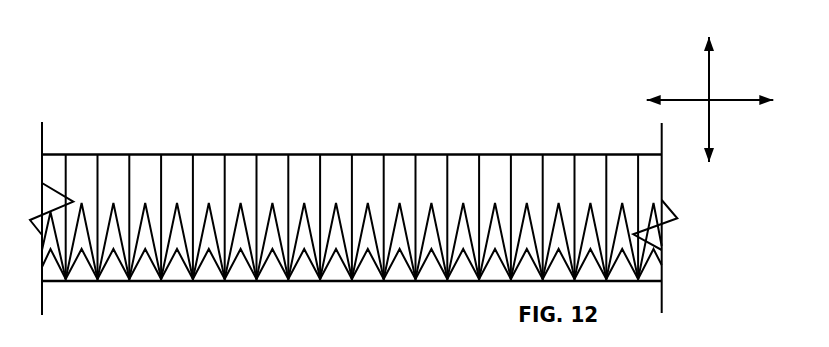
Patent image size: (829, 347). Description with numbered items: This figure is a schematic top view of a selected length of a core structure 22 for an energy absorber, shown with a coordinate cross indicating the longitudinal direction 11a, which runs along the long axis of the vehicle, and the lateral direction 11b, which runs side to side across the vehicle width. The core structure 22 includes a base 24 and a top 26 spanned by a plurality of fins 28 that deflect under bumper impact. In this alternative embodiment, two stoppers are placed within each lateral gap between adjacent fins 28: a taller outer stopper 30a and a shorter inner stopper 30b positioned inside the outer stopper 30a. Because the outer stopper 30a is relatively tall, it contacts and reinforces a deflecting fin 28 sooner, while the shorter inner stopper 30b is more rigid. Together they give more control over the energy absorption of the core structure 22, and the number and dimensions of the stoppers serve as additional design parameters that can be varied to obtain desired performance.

The core structure 22 is at (433, 145).
The base 24 is at (212, 282).
The top 26 is at (248, 154).
The fins 28 is at (288, 180).
The outer stopper 30a is at (273, 195).
The inner stopper 30b is at (273, 277).
The longitudinal direction 11a is at (707, 75).
The lateral direction 11b is at (688, 98).